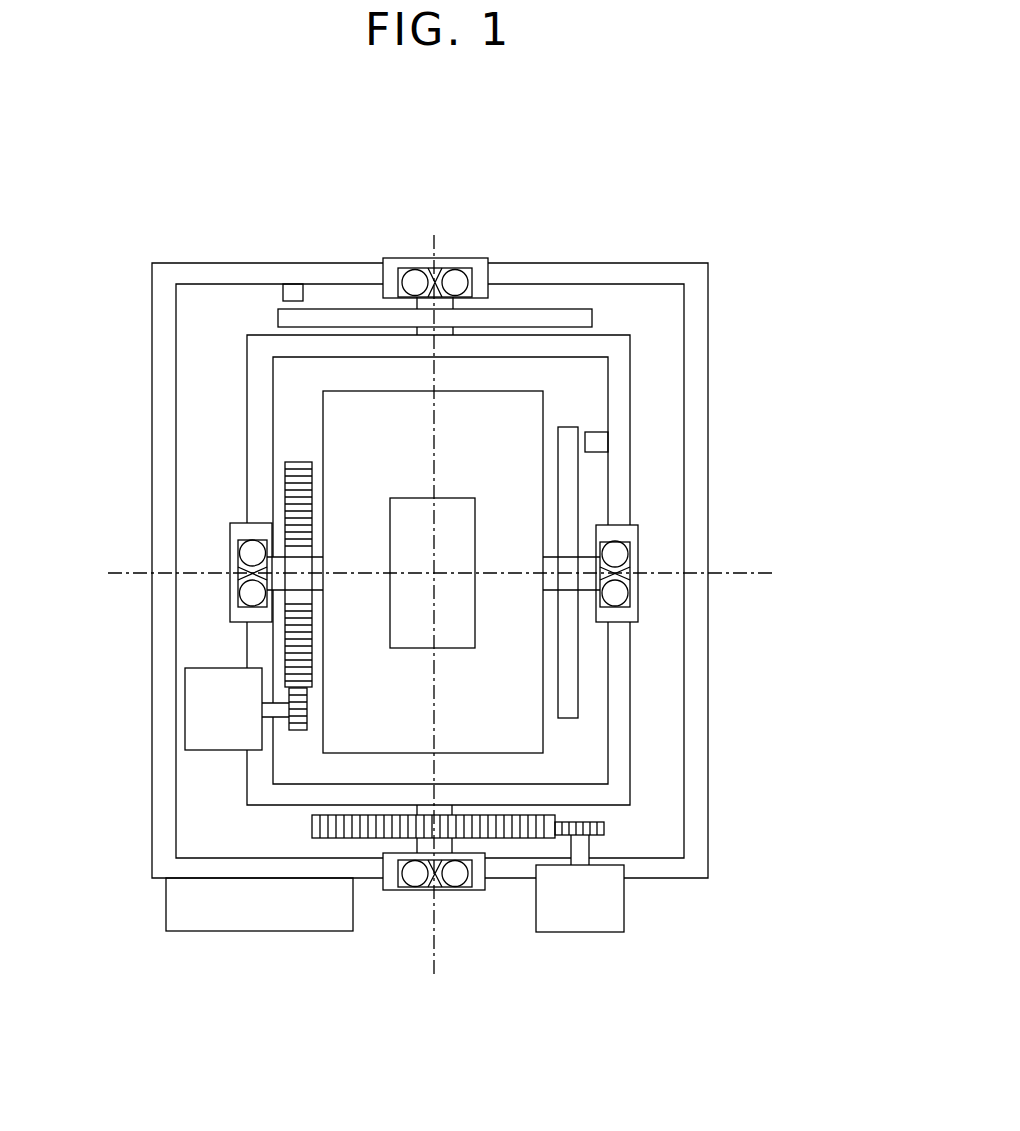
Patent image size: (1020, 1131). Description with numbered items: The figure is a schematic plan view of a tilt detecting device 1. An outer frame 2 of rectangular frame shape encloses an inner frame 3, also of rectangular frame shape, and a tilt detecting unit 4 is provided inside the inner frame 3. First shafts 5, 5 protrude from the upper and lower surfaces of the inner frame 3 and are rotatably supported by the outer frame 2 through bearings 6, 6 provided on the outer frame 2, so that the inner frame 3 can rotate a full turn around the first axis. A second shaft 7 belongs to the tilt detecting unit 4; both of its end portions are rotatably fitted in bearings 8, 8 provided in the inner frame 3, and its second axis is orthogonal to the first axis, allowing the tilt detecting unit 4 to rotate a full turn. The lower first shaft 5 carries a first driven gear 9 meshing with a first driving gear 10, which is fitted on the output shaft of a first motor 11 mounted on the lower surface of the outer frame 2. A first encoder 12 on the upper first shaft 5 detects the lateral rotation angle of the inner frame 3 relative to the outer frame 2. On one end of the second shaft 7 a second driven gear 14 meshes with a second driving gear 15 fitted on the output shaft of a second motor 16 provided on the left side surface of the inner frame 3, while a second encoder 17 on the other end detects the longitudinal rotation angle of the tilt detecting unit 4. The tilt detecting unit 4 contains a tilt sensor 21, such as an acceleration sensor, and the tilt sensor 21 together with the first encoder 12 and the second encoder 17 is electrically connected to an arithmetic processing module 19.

The tilt detecting device 1 is at (458, 129).
The outer frame 2 is at (647, 263).
The inner frame 3 is at (610, 336).
The tilt detecting unit 4 is at (545, 392).
The first shaft 5 is at (457, 306).
The bearing 6 is at (477, 258).
The second shaft 7 is at (580, 548).
The bearing 8 is at (230, 540).
The first driven gear 9 is at (312, 826).
The first driving gear 10 is at (605, 823).
The first motor 11 is at (624, 908).
The first encoder 12 is at (310, 300).
The second driven gear 14 is at (300, 460).
The second driving gear 15 is at (303, 730).
The second motor 16 is at (185, 735).
The second encoder 17 is at (590, 422).
The arithmetic processing module 19 is at (248, 931).
The tilt sensor 21 is at (455, 497).